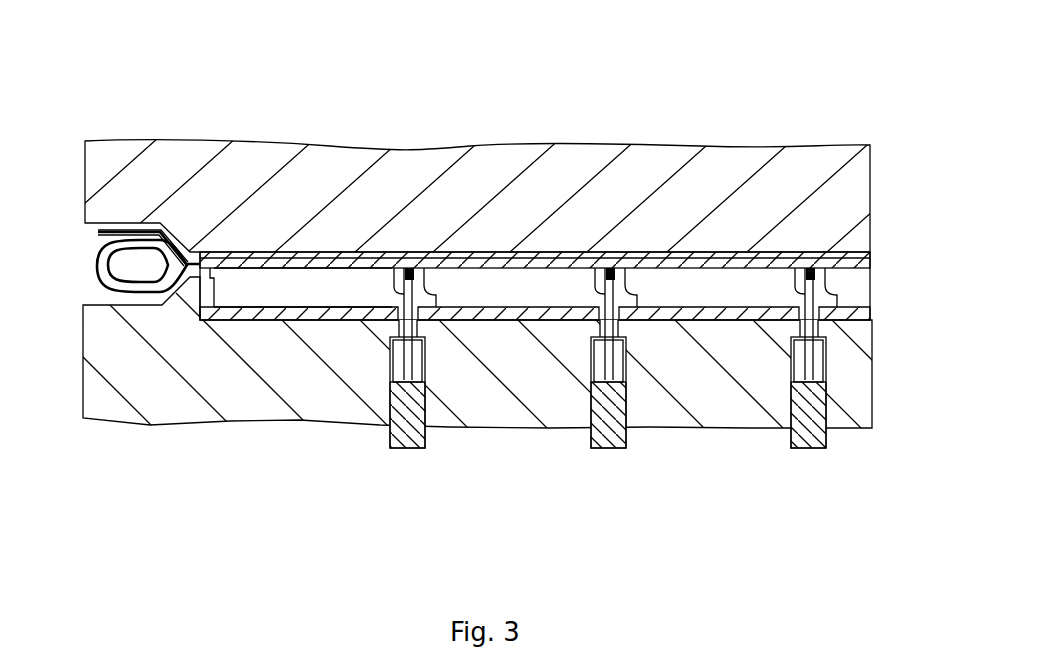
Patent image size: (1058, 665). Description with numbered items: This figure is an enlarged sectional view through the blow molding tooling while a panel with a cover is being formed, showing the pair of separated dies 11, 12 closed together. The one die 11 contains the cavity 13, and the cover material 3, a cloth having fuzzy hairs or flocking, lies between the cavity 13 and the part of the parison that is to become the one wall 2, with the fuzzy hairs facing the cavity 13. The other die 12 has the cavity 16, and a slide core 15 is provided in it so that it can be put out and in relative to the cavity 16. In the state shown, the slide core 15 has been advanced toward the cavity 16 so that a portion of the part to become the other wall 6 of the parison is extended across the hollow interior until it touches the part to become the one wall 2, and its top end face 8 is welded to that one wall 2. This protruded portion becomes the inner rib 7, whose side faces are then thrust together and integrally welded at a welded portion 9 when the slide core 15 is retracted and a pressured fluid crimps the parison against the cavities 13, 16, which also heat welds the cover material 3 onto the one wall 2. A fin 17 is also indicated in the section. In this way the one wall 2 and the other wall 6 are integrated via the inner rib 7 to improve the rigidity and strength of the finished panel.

The one wall 2 is at (685, 256).
The cover material 3 is at (738, 256).
The other wall 6 is at (724, 320).
The inner rib 7 is at (434, 305).
The top end face 8 is at (428, 268).
The welded portion 9 is at (395, 290).
The one die 11 is at (557, 160).
The other die 12 is at (561, 410).
The cavity 13 is at (313, 266).
The slide core 15 is at (405, 448).
The cavity 16 is at (268, 307).
The fin 17 is at (97, 266).